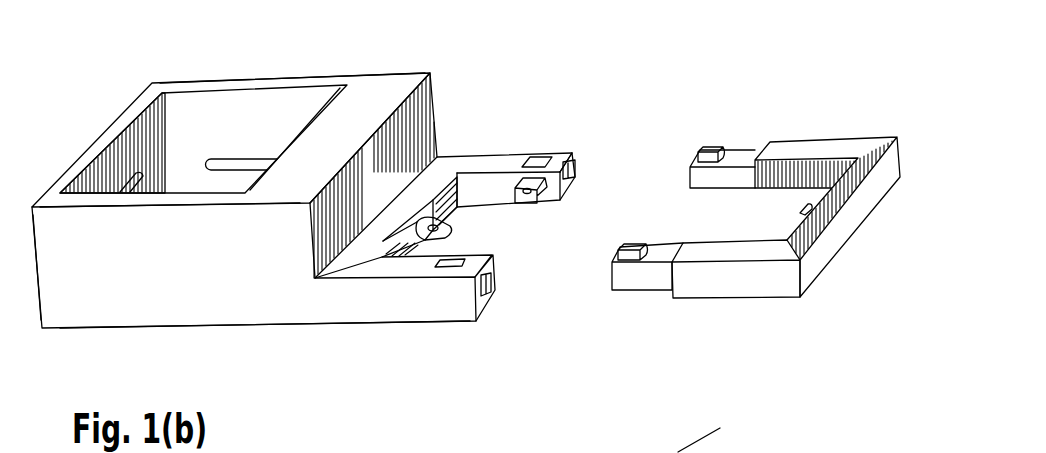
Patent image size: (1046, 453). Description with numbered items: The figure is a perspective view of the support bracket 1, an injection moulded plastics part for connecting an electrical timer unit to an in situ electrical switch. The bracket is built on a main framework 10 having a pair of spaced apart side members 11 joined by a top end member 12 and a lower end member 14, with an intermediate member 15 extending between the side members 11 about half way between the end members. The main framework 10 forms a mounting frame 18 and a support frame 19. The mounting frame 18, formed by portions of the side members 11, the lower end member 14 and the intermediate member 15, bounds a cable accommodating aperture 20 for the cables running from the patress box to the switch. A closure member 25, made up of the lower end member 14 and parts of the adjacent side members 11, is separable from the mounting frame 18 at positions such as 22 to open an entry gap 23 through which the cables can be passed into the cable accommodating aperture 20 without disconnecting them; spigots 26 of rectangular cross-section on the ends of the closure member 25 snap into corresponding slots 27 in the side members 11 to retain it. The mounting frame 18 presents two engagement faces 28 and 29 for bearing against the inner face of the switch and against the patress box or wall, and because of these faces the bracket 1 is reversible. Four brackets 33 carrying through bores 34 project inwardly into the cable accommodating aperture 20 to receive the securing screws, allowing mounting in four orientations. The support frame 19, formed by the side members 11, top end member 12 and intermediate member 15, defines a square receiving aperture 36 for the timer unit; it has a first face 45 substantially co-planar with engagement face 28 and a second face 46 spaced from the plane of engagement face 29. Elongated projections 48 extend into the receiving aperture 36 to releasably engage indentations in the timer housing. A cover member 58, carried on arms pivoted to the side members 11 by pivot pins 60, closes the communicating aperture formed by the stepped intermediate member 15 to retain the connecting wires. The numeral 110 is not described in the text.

The support bracket 1 is at (80, 112).
The main framework 10 is at (290, 308).
The side members 11 is at (307, 92).
The top end member 12 is at (122, 138).
The lower end member 14 is at (818, 258).
The intermediate member 15 is at (437, 100).
The mounting frame 18 is at (565, 160).
The support frame 19 is at (110, 310).
The cable accommodating aperture 20 is at (482, 180).
The separation position 22 is at (575, 163).
The entry gap 23 is at (553, 202).
The closure member 25 is at (735, 288).
The spigots 26 is at (728, 173).
The slots 27 is at (487, 295).
The engagement face 28 is at (432, 320).
The engagement face 29 is at (462, 158).
The brackets 33 is at (433, 217).
The through bores 34 is at (417, 228).
The receiving aperture 36 is at (232, 100).
The first face 45 is at (175, 310).
The second face 46 is at (190, 82).
The elongated projections 48 is at (243, 160).
The cover member 58 is at (455, 207).
The pivot pins 60 is at (502, 187).
The element 110 is at (716, 436).